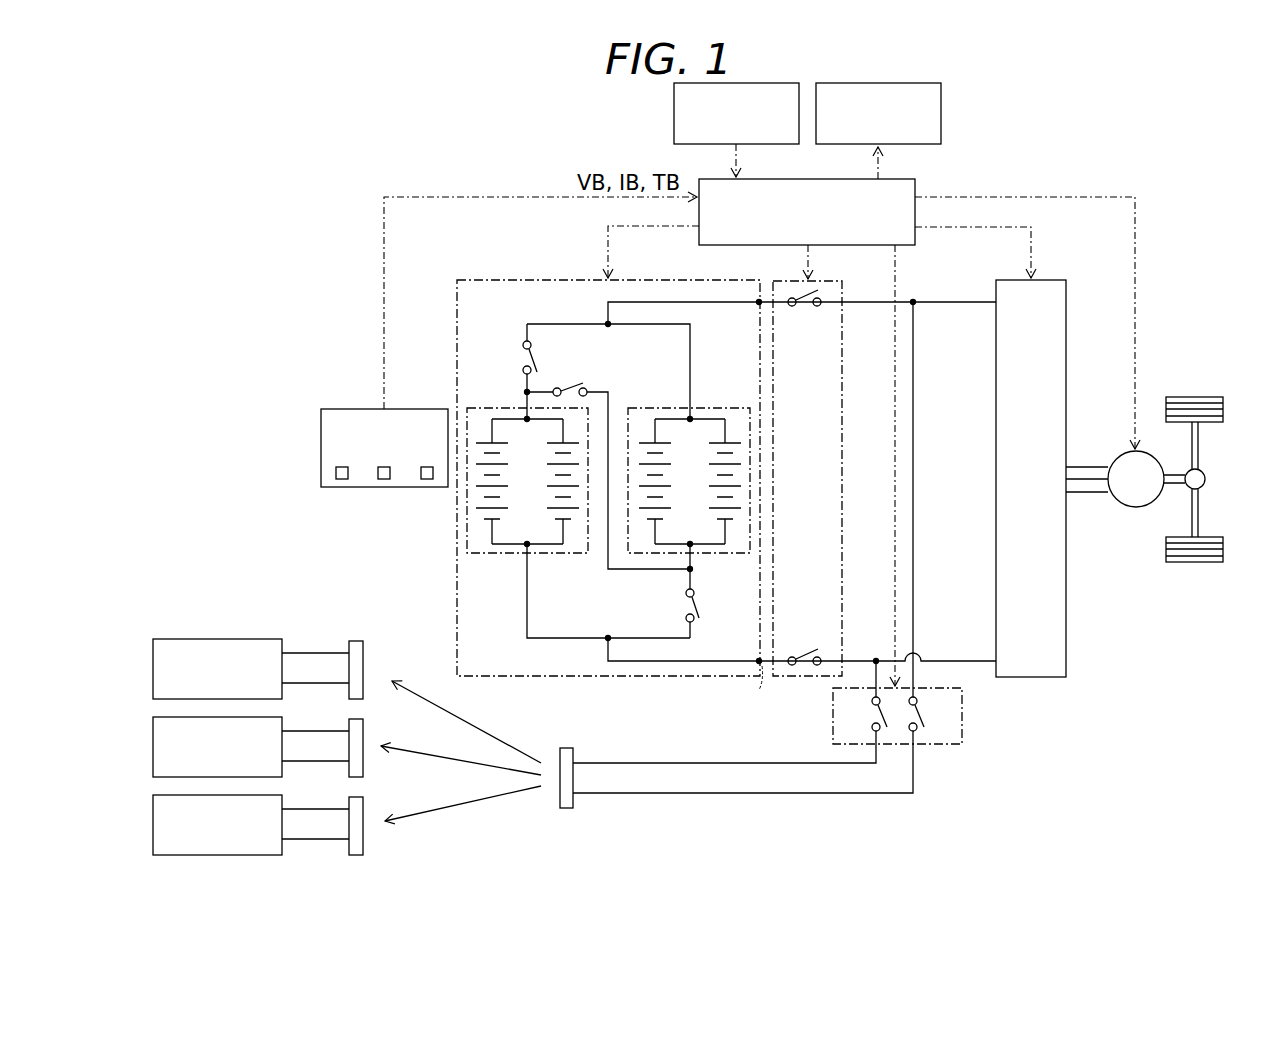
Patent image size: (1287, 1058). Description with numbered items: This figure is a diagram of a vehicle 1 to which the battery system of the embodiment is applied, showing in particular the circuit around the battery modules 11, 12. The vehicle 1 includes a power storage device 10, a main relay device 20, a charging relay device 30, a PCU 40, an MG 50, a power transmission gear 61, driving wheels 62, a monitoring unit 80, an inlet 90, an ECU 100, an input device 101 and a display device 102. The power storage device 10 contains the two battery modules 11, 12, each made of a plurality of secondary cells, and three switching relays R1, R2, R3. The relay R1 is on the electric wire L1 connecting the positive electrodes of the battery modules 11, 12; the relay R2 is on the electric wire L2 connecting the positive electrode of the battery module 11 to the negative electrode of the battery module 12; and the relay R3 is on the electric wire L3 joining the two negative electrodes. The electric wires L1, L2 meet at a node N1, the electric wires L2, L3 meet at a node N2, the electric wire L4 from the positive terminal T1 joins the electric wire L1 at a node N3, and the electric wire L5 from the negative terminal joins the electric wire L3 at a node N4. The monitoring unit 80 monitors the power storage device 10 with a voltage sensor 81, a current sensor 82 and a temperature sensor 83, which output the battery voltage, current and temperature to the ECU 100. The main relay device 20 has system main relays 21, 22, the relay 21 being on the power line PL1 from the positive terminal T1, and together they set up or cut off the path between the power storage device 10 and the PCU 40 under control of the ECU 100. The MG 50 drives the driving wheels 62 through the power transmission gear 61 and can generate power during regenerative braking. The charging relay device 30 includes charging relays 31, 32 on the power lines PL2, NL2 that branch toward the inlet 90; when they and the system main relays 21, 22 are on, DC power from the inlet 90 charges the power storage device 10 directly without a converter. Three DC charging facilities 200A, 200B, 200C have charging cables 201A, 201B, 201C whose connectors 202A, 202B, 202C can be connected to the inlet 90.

The vehicle 1 is at (1215, 160).
The power storage device 10 is at (488, 279).
The battery module 11 is at (496, 408).
The battery module 12 is at (720, 408).
The main relay device 20 is at (836, 283).
The system main relay 21 is at (807, 313).
The system main relay 22 is at (807, 651).
The charging relay device 30 is at (964, 716).
The charging relay 31 is at (918, 709).
The charging relay 32 is at (871, 709).
The power control unit 40 is at (1046, 279).
The motor generator 50 is at (1137, 508).
The power transmission gear 61 is at (1206, 479).
The driving wheels 62 is at (1222, 397).
The monitoring unit 80 is at (337, 408).
The voltage sensor 81 is at (342, 480).
The current sensor 82 is at (384, 480).
The temperature sensor 83 is at (427, 480).
The inlet 90 is at (566, 747).
The electronic control unit 100 is at (916, 181).
The input device 101 is at (672, 112).
The display device 102 is at (943, 112).
The DC charging facility 200A is at (152, 671).
The DC charging facility 200B is at (152, 748).
The DC charging facility 200C is at (152, 826).
The charging cable 201A is at (318, 651).
The charging cable 201B is at (318, 729).
The charging cable 201C is at (318, 807).
The connector 202A is at (365, 650).
The connector 202B is at (365, 769).
The connector 202C is at (365, 845).
The relay R1 is at (522, 356).
The relay R2 is at (576, 388).
The relay R3 is at (685, 605).
The node N1 is at (515, 390).
The node N2 is at (692, 572).
The node N3 is at (604, 322).
The node N4 is at (604, 642).
The electric wire L1 is at (692, 370).
The electric wire L2 is at (614, 572).
The electric wire L3 is at (524, 612).
The electric wire L4 is at (724, 305).
The electric wire L5 is at (729, 657).
The positive terminal T1 is at (760, 299).
The power line PL1 is at (862, 306).
The power line PL2 is at (820, 795).
The power line NL2 is at (766, 748).